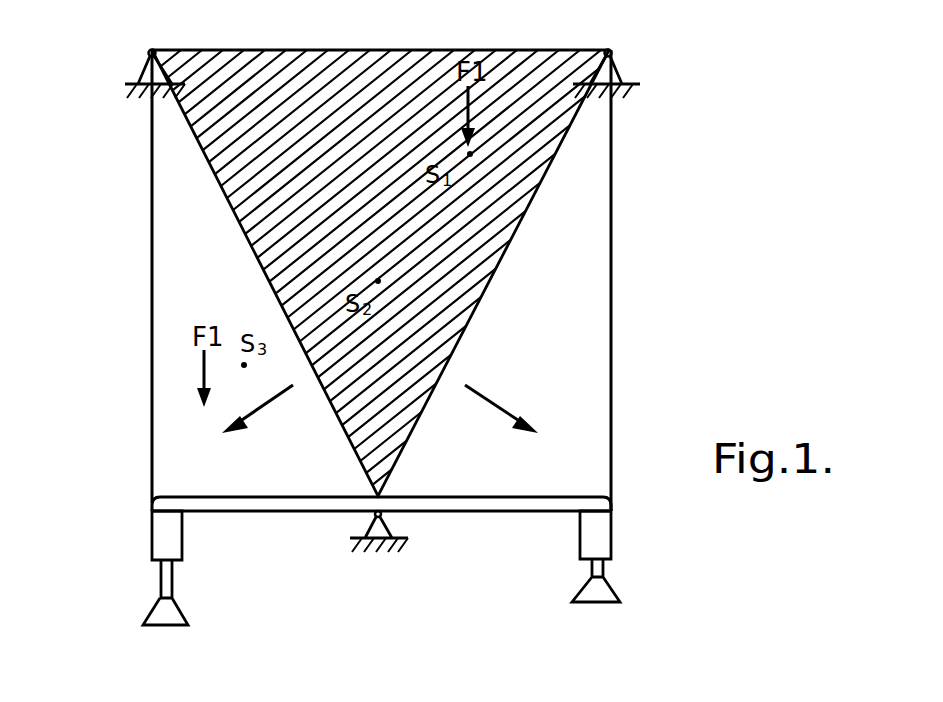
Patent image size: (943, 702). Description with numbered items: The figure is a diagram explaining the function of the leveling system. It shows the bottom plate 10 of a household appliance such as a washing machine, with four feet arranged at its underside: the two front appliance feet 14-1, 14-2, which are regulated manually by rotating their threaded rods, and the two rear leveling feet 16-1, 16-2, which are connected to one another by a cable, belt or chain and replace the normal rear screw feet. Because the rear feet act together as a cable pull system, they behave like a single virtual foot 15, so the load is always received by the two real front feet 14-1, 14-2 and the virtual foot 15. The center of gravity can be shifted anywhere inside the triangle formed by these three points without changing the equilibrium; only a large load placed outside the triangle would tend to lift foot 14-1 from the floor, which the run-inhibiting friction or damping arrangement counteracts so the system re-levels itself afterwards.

The bottom plate 10 is at (592, 330).
The front appliance foot 14-1 is at (612, 52).
The front appliance foot 14-2 is at (150, 52).
The virtual foot 15 is at (384, 517).
The rear leveling foot 16-1 is at (611, 530).
The rear leveling foot 16-2 is at (152, 543).